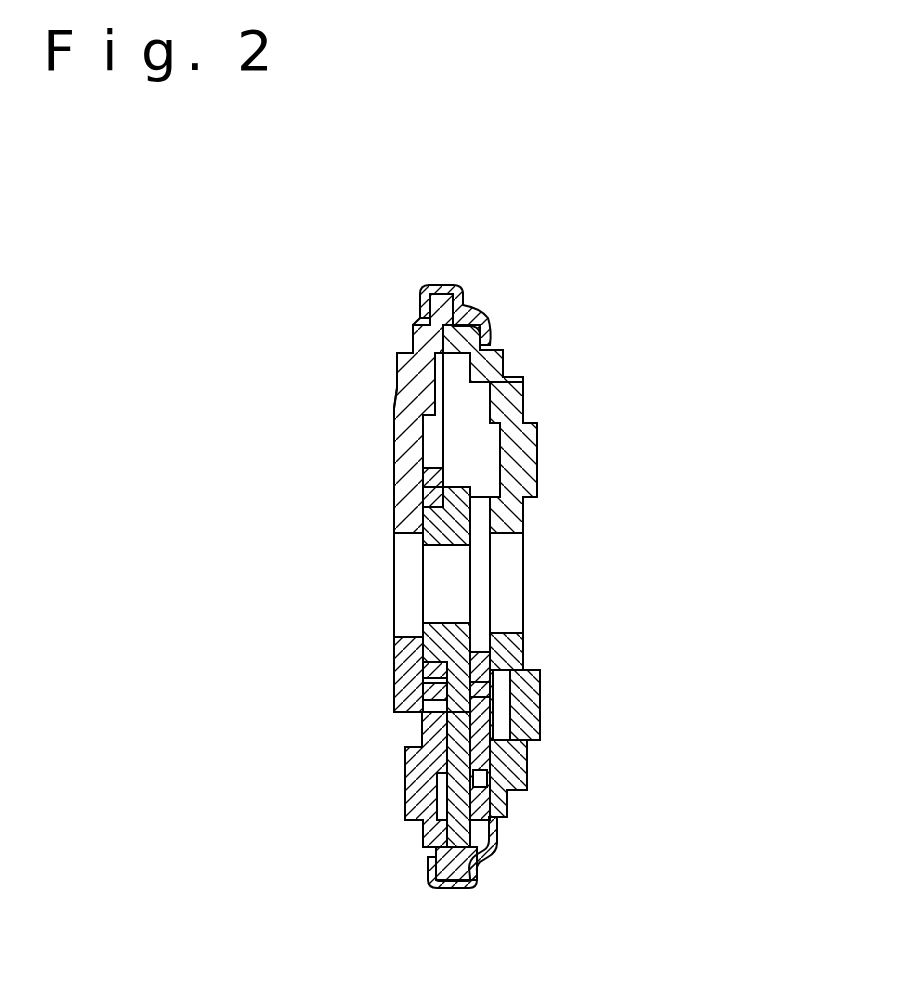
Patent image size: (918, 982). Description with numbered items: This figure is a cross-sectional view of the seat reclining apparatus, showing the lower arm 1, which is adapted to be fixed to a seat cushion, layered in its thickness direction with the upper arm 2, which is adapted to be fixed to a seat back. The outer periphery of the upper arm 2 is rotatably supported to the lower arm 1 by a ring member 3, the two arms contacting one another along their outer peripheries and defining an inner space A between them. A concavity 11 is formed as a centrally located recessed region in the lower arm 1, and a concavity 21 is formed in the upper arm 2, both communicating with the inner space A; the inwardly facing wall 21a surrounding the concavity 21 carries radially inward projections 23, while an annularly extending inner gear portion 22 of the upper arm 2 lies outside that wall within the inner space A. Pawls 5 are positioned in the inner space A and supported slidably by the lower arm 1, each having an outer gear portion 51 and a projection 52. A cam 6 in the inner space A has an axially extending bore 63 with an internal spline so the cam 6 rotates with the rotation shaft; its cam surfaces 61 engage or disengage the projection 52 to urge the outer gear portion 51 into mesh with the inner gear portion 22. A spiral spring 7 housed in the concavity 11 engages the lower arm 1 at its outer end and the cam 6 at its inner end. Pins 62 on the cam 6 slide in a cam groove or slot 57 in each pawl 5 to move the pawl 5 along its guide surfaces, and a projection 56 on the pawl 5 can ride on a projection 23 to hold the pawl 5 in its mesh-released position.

The lower arm 1 is at (377, 402).
The upper arm 2 is at (532, 381).
The ring member 3 is at (447, 282).
The inner space A is at (478, 400).
The inner gear portion 22 is at (455, 372).
The concavity 21 is at (478, 503).
The inwardly facing wall 21a is at (400, 422).
The concavity 11 is at (445, 447).
The spiral spring 7 is at (425, 500).
The cam 6 is at (475, 538).
The bore 63 is at (442, 623).
The cam groove or slot 57 is at (492, 688).
The pin 62 is at (543, 704).
The pawl 5 is at (418, 723).
The projection 52 is at (541, 733).
The projection 23 is at (497, 752).
The cam surface 61 is at (407, 810).
The projection 56 is at (500, 820).
The outer gear portion 51 is at (423, 850).